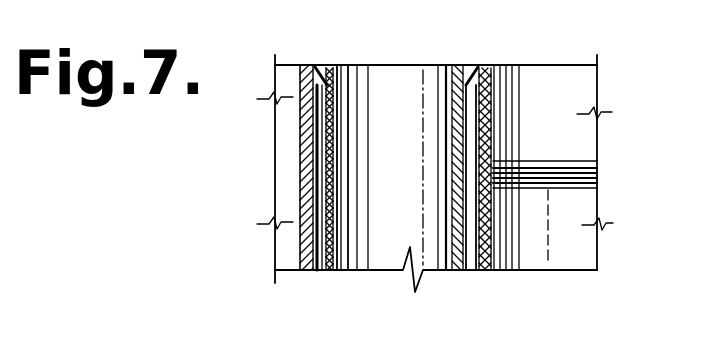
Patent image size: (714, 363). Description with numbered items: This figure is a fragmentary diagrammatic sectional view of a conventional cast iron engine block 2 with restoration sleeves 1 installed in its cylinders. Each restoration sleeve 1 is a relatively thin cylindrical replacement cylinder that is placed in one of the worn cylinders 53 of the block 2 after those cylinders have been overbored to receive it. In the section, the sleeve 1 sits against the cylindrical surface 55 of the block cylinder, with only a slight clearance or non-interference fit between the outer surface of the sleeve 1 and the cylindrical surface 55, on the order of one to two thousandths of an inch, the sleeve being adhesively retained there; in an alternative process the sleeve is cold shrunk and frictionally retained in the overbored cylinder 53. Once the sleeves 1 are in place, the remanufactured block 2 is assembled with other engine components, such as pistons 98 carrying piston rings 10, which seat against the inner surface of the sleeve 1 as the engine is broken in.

The restoration sleeve 1 is at (399, 87).
The cast iron engine block 2 is at (287, 78).
The piston rings 10 is at (597, 168).
The worn cylinders 53 is at (350, 242).
The cylindrical surface of the block cylinders 55 is at (352, 78).
The pistons 98 is at (594, 250).